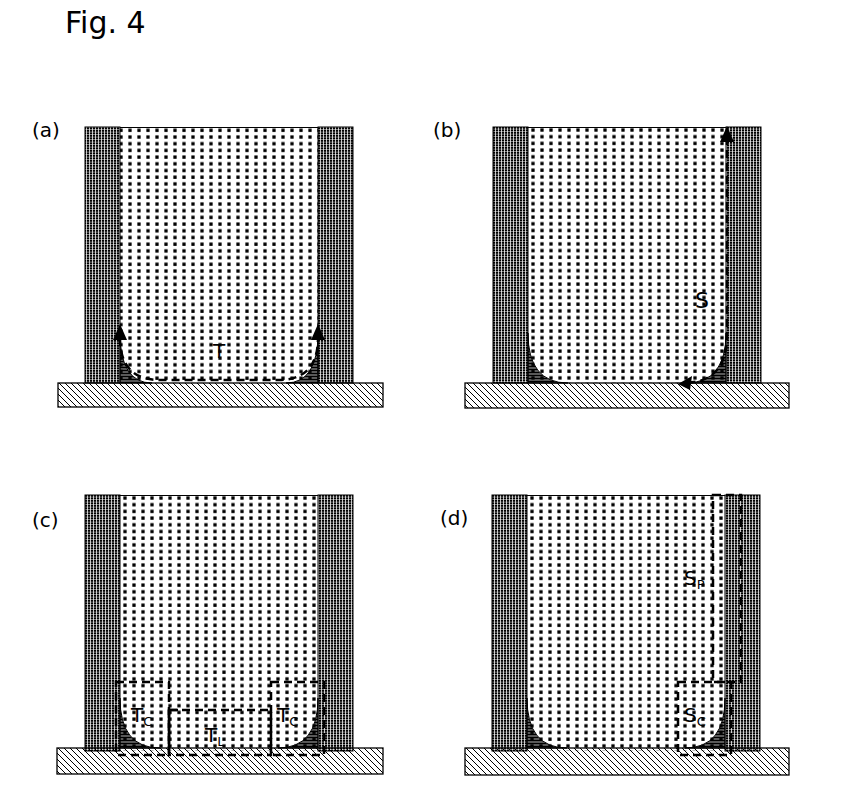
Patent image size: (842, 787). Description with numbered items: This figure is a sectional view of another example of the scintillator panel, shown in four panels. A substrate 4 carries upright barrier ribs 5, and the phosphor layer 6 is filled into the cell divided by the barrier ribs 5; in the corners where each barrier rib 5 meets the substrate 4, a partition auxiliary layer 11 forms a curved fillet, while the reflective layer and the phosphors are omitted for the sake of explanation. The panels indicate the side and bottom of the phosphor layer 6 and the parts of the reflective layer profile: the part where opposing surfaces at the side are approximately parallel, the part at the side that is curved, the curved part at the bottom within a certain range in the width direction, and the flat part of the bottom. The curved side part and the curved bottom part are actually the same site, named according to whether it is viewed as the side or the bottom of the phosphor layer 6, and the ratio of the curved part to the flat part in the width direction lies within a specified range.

The substrate 4 is at (80, 398).
The barrier rib 5 is at (88, 226).
The phosphor layer 6 is at (220, 154).
The partition auxiliary layer 11 is at (130, 368).